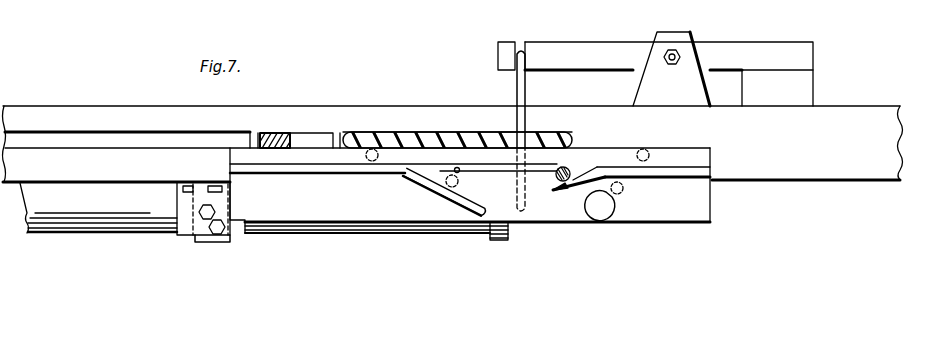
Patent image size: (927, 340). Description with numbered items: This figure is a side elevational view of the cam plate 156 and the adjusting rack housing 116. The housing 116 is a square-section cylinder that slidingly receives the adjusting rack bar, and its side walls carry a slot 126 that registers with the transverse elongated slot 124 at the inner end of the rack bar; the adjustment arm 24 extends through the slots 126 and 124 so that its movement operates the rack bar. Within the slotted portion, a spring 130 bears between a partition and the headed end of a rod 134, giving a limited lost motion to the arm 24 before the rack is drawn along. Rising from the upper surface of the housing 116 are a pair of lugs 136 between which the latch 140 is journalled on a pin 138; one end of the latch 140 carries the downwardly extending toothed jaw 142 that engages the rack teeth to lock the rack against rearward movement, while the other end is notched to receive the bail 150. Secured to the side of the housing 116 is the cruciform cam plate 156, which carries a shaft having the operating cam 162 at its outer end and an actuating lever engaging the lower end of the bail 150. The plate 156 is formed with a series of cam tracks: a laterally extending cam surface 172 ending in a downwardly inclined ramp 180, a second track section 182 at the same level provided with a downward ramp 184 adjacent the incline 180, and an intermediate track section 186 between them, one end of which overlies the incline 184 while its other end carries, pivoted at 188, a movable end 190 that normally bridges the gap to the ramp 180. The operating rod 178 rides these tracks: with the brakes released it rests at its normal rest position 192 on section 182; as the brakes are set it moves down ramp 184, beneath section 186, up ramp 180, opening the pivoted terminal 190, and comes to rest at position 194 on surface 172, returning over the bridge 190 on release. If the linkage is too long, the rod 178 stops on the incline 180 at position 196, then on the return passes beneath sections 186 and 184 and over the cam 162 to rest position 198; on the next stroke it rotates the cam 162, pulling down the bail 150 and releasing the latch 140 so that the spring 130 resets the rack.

The cylindrical housing 116 is at (863, 118).
The slot 126 is at (78, 130).
The transverse elongated slot 124 is at (250, 140).
The adjustment arm 24 is at (284, 133).
The spring 130 is at (410, 132).
The rod 134 is at (447, 133).
The bail 150 is at (517, 92).
The latch 140 is at (558, 57).
The jaw 142 is at (795, 90).
The lugs 136 is at (657, 50).
The pin 138 is at (682, 52).
The second track section 182 is at (670, 168).
The cam plate 156 is at (443, 210).
The cam surface 172 is at (352, 170).
The intermediate track section 186 is at (500, 168).
The movable end 190 is at (430, 171).
The downwardly inclined ramp 180 is at (440, 188).
The downward ramp 184 is at (567, 185).
The operating rod 178 is at (573, 168).
The rest position 194 is at (373, 163).
The pivot 188 is at (457, 168).
The position 196 is at (452, 190).
The normal rest position 192 is at (650, 152).
The rest position 198 is at (622, 193).
The operating cam 162 is at (595, 208).